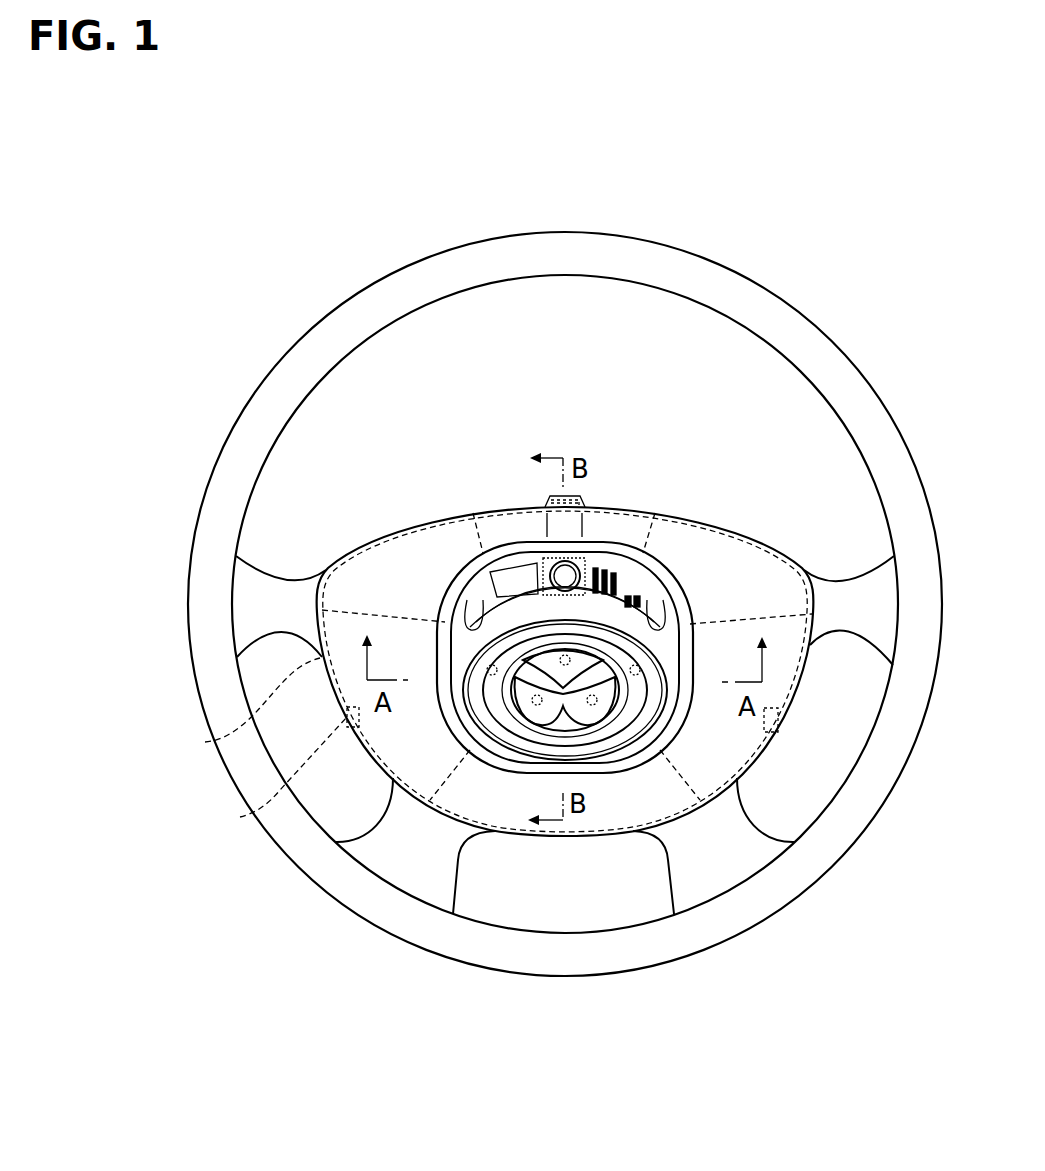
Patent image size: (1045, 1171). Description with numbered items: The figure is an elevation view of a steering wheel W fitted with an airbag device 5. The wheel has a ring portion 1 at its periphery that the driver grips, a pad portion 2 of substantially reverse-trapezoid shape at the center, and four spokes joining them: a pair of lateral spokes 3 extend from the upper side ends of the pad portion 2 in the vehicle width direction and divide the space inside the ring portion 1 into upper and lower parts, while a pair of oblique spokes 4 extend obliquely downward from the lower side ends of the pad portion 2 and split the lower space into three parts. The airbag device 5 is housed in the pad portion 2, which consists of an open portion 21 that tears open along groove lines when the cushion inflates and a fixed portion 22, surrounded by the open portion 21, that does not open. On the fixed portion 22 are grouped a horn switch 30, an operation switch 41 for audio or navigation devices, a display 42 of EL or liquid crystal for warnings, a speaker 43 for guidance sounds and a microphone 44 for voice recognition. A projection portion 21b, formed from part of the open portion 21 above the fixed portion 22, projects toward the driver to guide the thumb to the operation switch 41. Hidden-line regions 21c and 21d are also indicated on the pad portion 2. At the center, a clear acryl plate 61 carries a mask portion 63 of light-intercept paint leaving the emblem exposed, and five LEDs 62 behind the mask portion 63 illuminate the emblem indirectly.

The steering wheel W is at (283, 212).
The ring portion 1 is at (798, 312).
The pad portion 2 is at (660, 480).
The lateral spoke 3 is at (288, 593).
The oblique spoke 4 is at (373, 835).
The airbag device 5 is at (414, 550).
The open portion 21 is at (760, 556).
The projection portion 21b is at (577, 513).
The cover hidden portion 21c is at (257, 710).
The cover hidden portion 21d is at (484, 768).
The fixed portion 22 is at (498, 535).
The horn switch 30 is at (457, 685).
The operation switch 41 is at (565, 576).
The display 42 is at (494, 589).
The speaker 43 is at (618, 578).
The microphone 44 is at (650, 597).
The clear acryl plate 61 is at (615, 700).
The LED 62 is at (660, 666).
The mask portion 63 is at (550, 712).